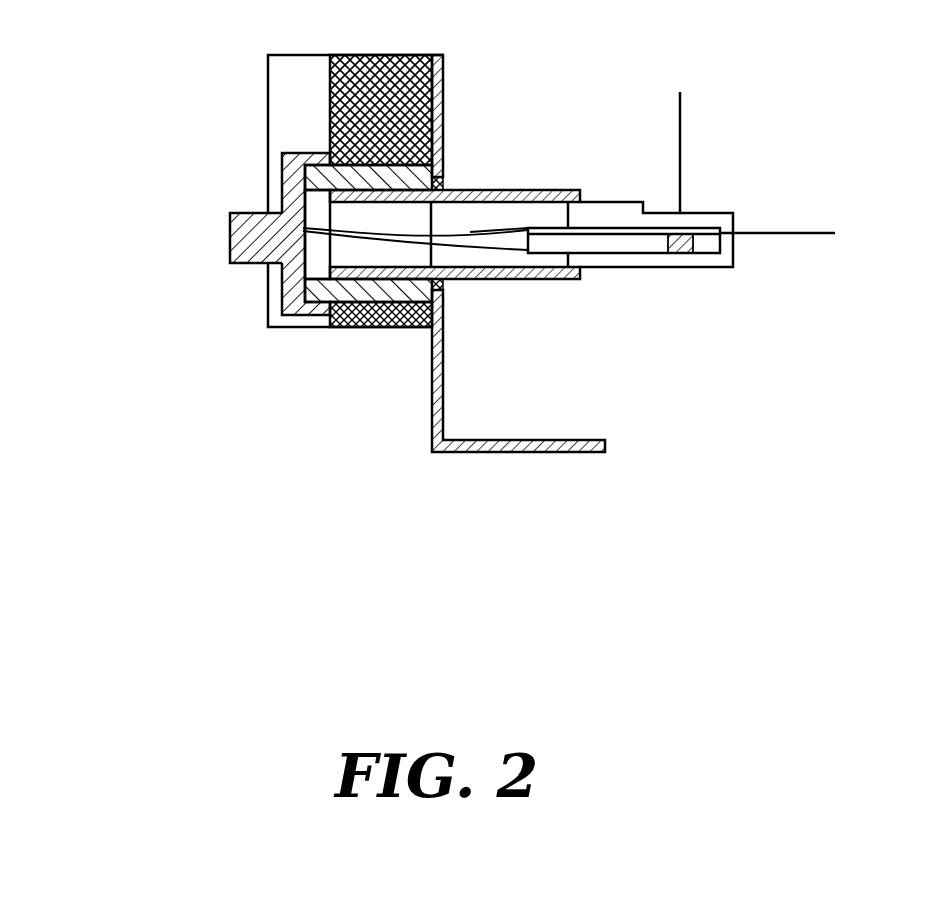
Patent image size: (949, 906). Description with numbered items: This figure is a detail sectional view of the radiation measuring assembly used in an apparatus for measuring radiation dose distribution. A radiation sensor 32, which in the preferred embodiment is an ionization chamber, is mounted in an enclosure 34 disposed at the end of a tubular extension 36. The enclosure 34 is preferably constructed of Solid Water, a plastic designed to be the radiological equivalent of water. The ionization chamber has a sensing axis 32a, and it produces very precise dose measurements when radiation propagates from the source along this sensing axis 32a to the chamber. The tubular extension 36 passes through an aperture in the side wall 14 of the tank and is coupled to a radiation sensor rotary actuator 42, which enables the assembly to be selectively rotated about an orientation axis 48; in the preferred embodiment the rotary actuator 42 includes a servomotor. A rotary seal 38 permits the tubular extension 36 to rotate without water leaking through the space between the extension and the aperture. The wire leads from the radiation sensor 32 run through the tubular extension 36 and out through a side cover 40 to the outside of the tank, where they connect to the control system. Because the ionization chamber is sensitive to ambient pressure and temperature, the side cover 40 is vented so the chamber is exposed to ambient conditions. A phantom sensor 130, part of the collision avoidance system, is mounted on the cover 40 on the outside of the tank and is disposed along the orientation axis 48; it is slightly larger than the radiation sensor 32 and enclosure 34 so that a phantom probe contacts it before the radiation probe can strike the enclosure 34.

The side wall 14 is at (430, 402).
The radiation sensor 32 is at (680, 253).
The sensing axis 32a is at (683, 152).
The enclosure 34 is at (720, 260).
The tubular extension 36 is at (480, 188).
The rotary seal 38 is at (443, 290).
The side cover 40 is at (290, 290).
The radiation sensor rotary actuator 42 is at (328, 328).
The orientation axis 48 is at (797, 235).
The phantom sensor 130 is at (230, 245).